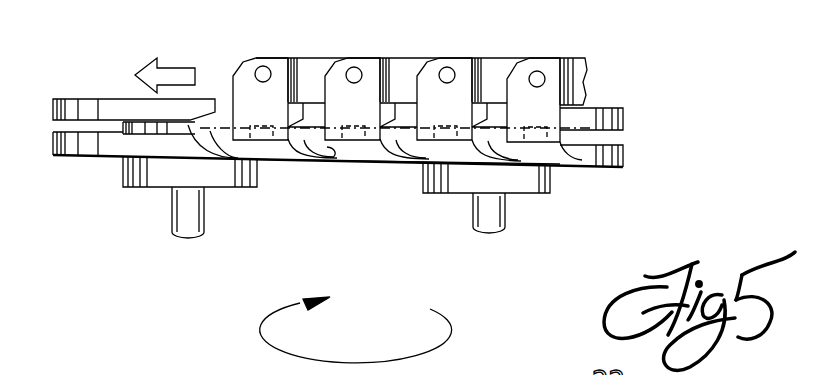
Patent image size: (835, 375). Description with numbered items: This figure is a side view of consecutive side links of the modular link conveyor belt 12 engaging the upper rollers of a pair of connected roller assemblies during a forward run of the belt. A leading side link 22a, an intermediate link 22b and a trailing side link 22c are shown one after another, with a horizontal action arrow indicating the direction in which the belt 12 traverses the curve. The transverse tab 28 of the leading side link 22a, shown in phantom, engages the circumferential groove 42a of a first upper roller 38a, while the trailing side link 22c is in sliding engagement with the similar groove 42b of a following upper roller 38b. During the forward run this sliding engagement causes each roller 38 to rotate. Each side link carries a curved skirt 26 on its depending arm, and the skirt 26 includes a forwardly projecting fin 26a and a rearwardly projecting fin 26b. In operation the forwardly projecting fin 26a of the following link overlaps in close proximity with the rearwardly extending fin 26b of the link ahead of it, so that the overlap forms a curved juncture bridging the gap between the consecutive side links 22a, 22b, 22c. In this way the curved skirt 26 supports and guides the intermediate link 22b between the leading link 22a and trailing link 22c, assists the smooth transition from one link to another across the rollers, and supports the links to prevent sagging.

The modular link conveyor belt 12 is at (604, 68).
The leading side link 22a is at (264, 66).
The intermediate link 22b is at (362, 62).
The trailing side link 22c is at (461, 63).
The curved skirt 26 is at (406, 178).
The forwardly projecting fin 26a is at (338, 152).
The rearwardly projecting fin 26b is at (289, 148).
The transverse tab 28 is at (245, 130).
The upper roller 38 is at (608, 160).
The first upper roller 38a is at (139, 187).
The following upper roller 38b is at (558, 190).
The circumferential groove of first upper roller 42a is at (50, 125).
The circumferential groove of following upper roller 42b is at (640, 138).